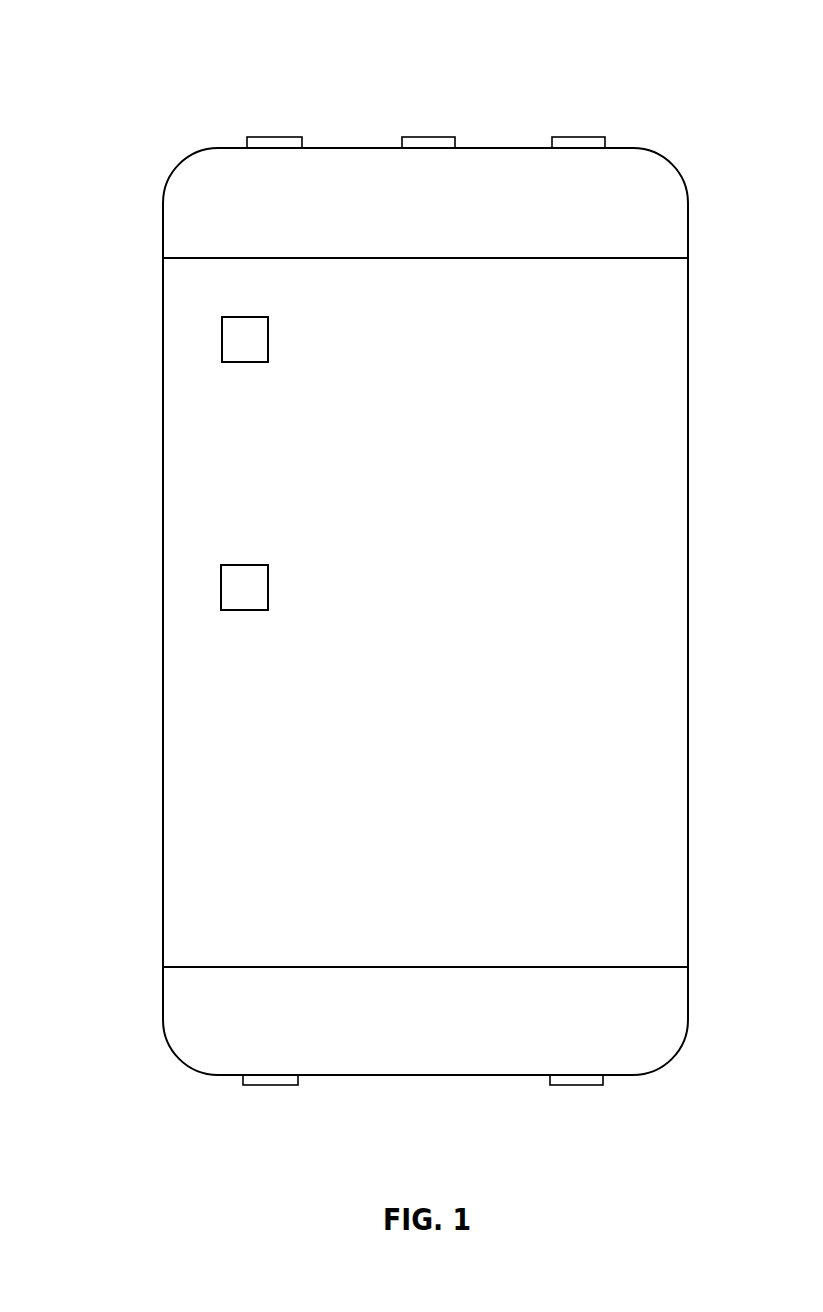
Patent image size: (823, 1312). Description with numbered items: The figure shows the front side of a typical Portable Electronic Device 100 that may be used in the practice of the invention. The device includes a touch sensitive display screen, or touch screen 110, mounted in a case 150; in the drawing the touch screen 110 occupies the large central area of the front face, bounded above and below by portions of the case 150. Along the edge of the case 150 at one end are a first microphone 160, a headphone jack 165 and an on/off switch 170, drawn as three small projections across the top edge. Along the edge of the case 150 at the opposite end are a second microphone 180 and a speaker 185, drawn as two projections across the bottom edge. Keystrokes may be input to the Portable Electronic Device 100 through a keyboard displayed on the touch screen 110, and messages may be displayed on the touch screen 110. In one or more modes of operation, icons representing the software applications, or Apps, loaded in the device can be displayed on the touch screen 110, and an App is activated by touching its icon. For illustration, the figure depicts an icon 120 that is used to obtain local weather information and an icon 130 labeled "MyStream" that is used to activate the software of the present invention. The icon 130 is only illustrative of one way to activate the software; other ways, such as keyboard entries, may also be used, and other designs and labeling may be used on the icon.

The Portable Electronic Device 100 is at (118, 48).
The touch sensitive display screen 110 is at (180, 891).
The icon 120 is at (268, 340).
The icon 130 is at (268, 588).
The case 150 is at (180, 1003).
The first microphone 160 is at (275, 137).
The headphone jack 165 is at (428, 137).
The on/off switch 170 is at (578, 137).
The second microphone 180 is at (272, 1085).
The speaker 185 is at (578, 1085).